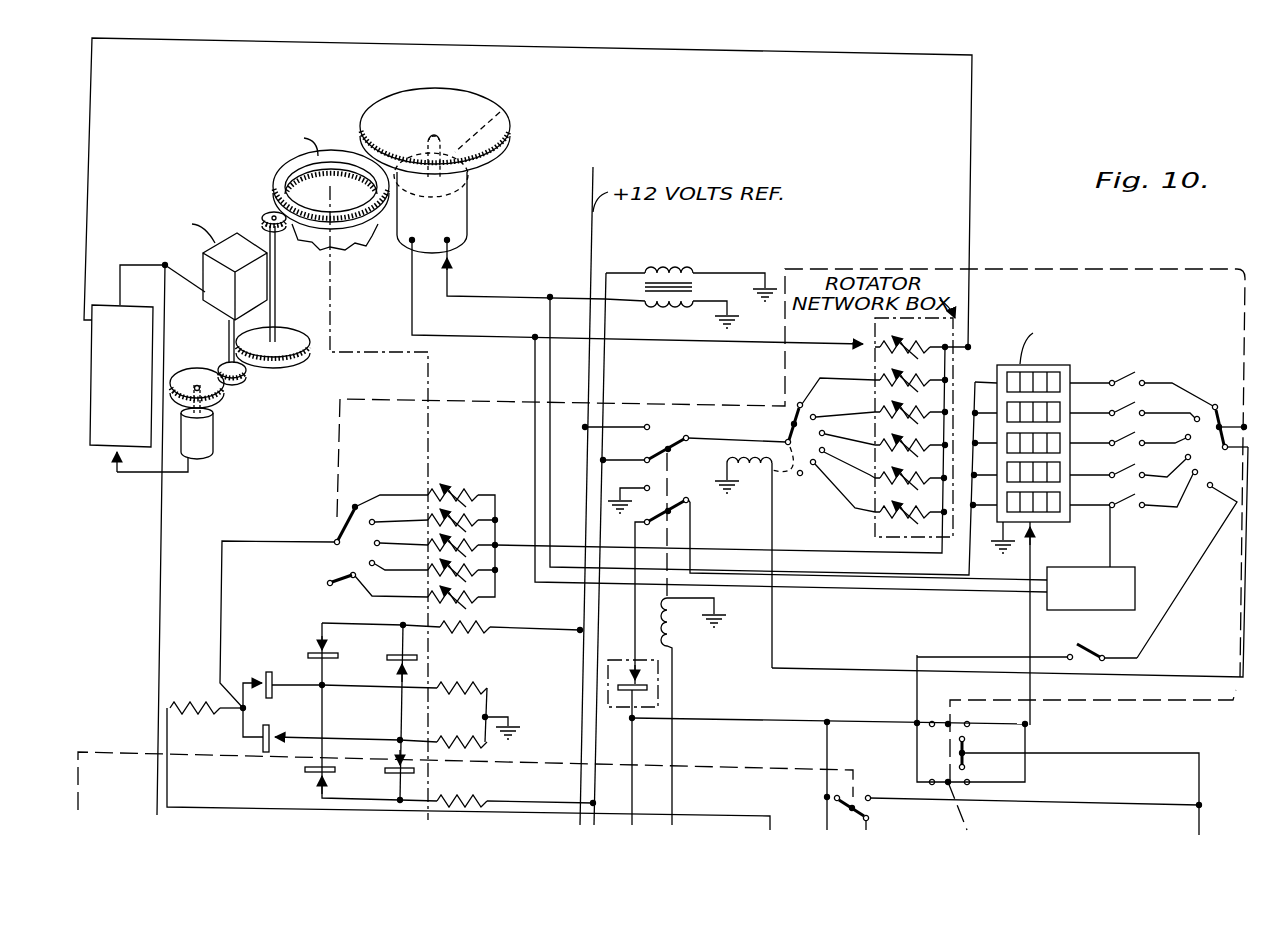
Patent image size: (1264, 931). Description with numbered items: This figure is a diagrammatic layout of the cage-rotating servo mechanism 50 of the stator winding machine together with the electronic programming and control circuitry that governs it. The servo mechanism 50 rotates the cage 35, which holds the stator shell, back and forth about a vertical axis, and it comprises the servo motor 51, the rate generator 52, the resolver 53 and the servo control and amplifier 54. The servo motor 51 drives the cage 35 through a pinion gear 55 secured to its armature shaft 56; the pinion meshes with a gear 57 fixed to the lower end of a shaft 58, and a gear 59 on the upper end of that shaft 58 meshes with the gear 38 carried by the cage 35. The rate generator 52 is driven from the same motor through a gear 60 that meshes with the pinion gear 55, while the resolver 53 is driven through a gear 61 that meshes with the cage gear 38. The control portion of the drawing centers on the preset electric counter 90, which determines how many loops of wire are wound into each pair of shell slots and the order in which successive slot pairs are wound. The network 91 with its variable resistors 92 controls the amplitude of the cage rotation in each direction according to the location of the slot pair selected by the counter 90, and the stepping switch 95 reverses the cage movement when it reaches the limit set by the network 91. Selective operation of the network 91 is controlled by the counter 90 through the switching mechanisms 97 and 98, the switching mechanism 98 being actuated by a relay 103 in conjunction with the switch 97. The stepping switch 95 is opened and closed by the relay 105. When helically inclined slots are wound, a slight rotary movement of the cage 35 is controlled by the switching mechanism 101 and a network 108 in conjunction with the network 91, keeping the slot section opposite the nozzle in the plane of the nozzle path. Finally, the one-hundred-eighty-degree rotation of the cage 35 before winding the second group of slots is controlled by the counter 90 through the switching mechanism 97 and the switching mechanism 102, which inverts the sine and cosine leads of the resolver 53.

The cage 35 is at (349, 240).
The gear 38 is at (288, 170).
The servo mechanism 50 is at (223, 210).
The servo motor 51 is at (255, 284).
The rate generator 52 is at (213, 443).
The resolver 53 is at (465, 209).
The servo control and amplifier 54 is at (98, 450).
The pinion gear 55 is at (227, 362).
The armature shaft 56 is at (229, 322).
The gear 57 is at (293, 358).
The shaft 58 is at (277, 265).
The gear 59 is at (266, 212).
The gear 60 is at (217, 394).
The gear 61 is at (400, 106).
The preset electric counter 90 is at (1081, 518).
The network 91 is at (968, 327).
The variable resistors 92 is at (922, 440).
The stepping switch 95 is at (680, 478).
The control switching mechanism 97 is at (1176, 405).
The control switching mechanism 98 is at (828, 497).
The switching mechanism 101 is at (392, 496).
The switching mechanism 102 is at (1135, 575).
The relay 103 is at (760, 468).
The relay 105 is at (683, 632).
The network 108 is at (502, 485).